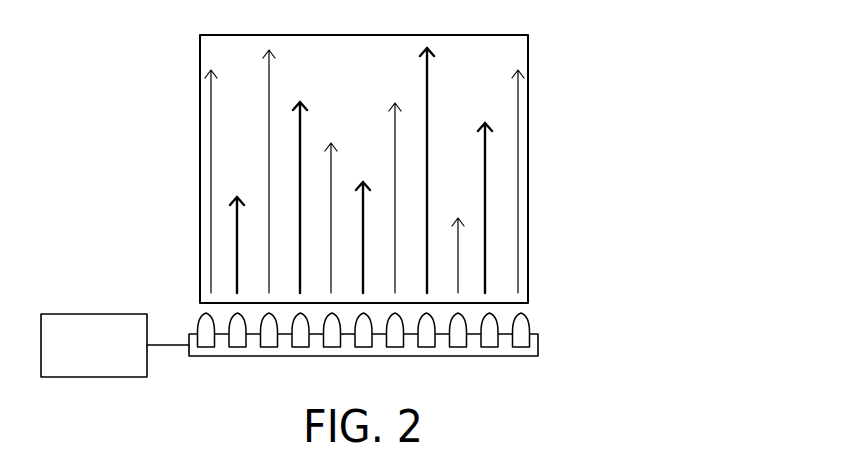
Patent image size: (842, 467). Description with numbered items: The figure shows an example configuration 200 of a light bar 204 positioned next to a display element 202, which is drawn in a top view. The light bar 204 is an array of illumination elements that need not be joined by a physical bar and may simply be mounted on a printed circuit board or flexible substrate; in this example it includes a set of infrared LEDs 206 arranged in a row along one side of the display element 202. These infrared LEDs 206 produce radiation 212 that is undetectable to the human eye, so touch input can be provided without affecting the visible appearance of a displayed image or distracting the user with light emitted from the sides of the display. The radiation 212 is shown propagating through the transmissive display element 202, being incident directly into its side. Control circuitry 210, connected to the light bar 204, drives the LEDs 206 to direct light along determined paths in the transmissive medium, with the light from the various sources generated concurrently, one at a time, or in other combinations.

The configuration 200 is at (738, 80).
The display element 202 is at (528, 62).
The light bar 204 is at (538, 343).
The infrared LEDs 206 is at (268, 350).
The control circuitry 210 is at (93, 314).
The radiation 212 is at (529, 183).